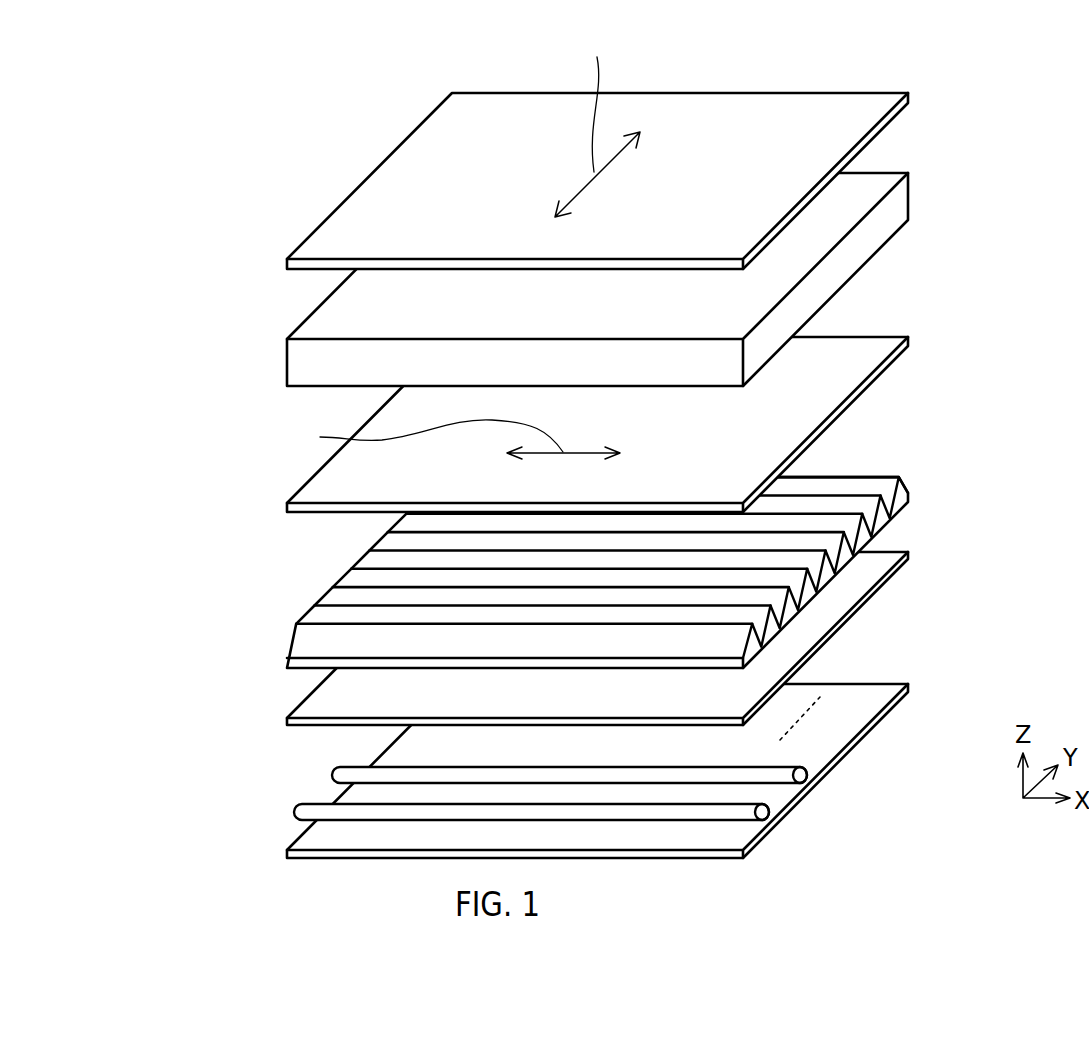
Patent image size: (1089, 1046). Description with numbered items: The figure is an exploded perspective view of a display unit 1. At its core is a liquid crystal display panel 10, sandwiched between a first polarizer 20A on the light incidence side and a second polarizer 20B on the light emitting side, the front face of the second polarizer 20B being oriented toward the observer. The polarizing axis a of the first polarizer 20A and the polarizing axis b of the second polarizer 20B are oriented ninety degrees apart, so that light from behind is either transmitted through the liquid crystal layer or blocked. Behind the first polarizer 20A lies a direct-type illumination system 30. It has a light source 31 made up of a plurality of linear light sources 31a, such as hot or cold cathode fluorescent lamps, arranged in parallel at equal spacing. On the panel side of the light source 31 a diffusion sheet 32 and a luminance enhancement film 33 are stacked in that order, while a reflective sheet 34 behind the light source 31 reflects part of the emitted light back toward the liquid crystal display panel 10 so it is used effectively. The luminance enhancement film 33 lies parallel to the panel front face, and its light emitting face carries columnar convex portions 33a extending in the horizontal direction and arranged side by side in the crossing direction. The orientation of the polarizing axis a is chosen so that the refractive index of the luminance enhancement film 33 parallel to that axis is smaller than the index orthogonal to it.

The display unit 1 is at (318, 114).
The liquid crystal display panel 10 is at (876, 228).
The first polarizer 20A is at (876, 351).
The second polarizer 20B is at (876, 106).
The illumination system 30 is at (935, 457).
The light source 31 is at (493, 778).
The linear light source 31a is at (356, 766).
The diffusion sheet 32 is at (288, 709).
The luminance enhancement film 33 is at (557, 572).
The convex portion 33a is at (352, 608).
The reflective sheet 34 is at (319, 841).
The polarizing axis a is at (462, 439).
The polarizing axis b is at (597, 120).